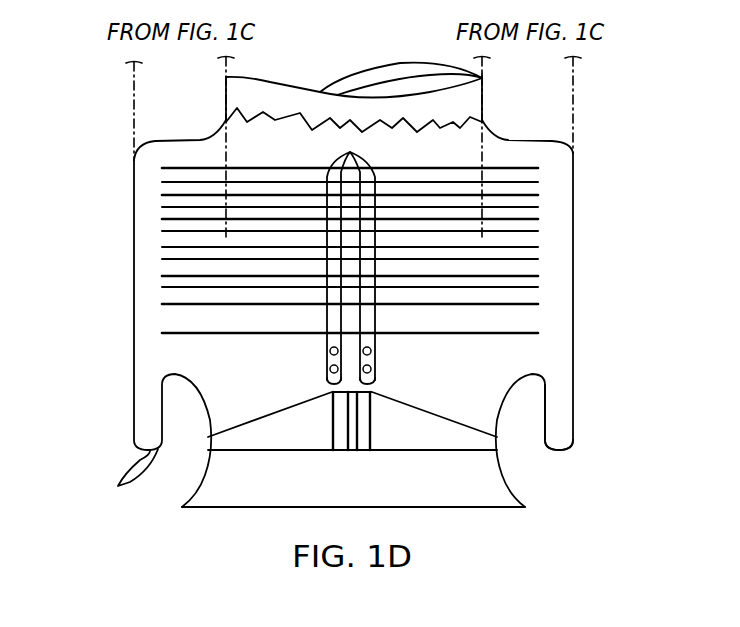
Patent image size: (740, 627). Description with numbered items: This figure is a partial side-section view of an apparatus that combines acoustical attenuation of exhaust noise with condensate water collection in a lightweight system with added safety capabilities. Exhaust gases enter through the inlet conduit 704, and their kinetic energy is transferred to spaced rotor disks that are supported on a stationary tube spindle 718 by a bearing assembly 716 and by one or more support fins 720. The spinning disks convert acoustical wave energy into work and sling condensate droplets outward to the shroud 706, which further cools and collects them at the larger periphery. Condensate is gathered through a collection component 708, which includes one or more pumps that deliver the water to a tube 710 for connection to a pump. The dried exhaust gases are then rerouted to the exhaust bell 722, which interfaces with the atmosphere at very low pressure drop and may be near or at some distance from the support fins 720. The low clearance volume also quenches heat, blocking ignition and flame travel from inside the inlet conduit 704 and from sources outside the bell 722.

The inlet conduit 704 is at (484, 95).
The shroud 706 is at (575, 180).
The collection component 708 is at (548, 393).
The tube 710 is at (123, 478).
The bearing assembly 716 is at (377, 370).
The stationary tube spindle 718 is at (332, 162).
The support fins 720 is at (497, 450).
The exhaust bell 722 is at (500, 507).